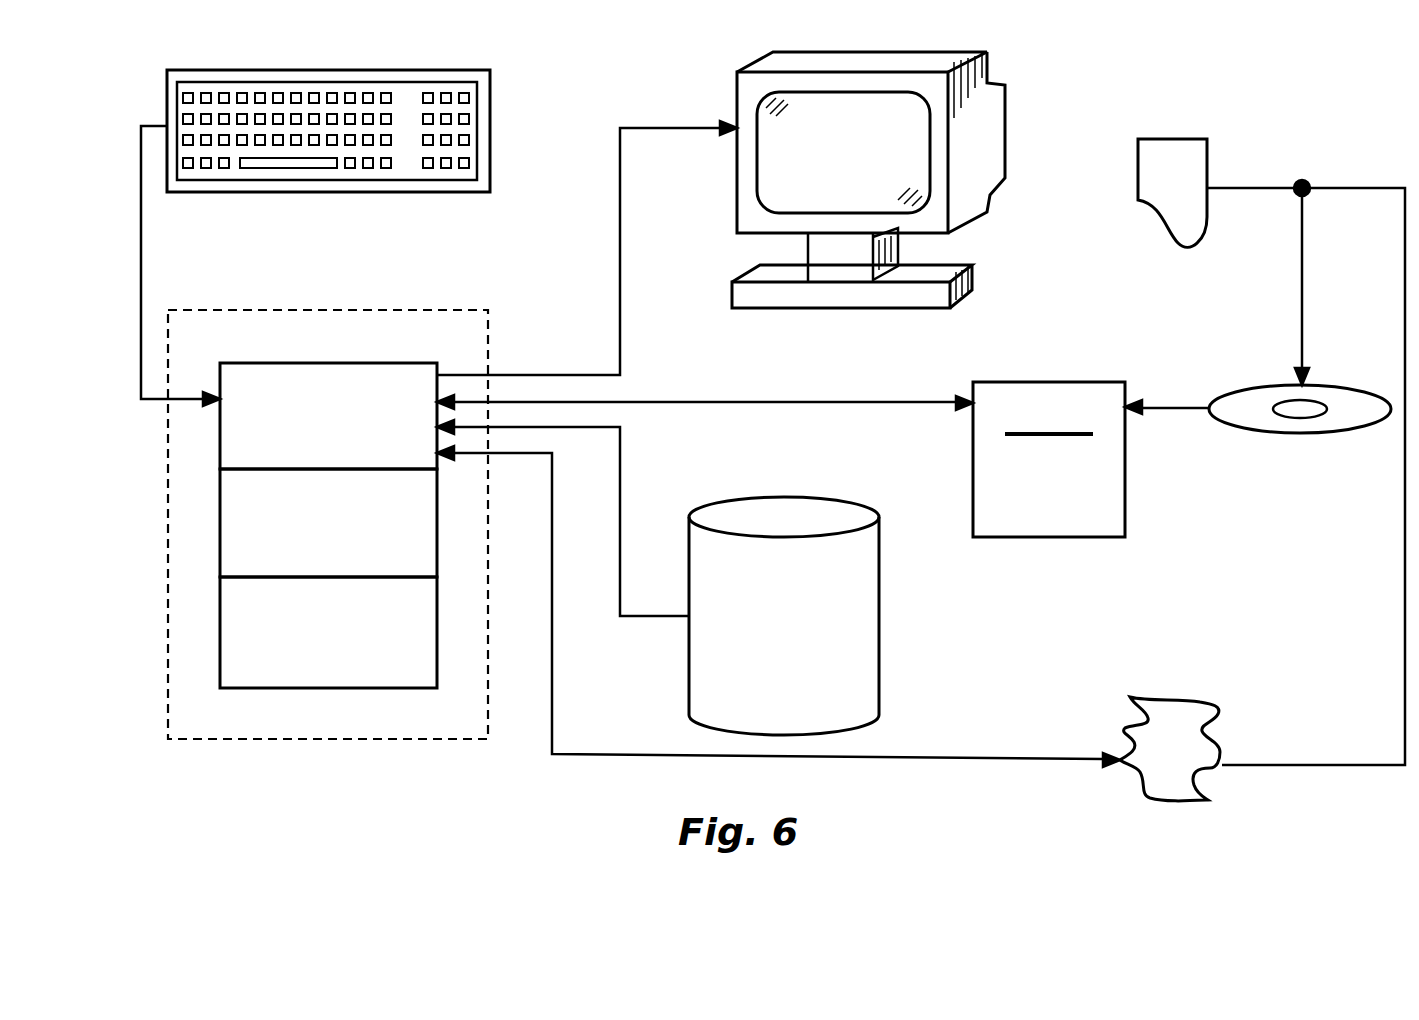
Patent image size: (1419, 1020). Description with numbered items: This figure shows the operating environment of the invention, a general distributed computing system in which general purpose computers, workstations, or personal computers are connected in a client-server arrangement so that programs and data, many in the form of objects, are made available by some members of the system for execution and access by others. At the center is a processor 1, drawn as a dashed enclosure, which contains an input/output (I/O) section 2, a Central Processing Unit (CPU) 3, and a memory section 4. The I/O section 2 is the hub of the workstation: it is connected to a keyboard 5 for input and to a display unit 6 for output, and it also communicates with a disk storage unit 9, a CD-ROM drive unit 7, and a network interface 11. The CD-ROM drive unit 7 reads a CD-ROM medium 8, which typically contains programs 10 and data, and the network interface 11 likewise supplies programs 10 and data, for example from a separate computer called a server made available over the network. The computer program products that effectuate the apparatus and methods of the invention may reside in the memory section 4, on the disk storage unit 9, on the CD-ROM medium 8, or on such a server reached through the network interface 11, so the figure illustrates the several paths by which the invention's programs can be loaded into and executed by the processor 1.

The processor 1 is at (442, 308).
The input/output (I/O) section 2 is at (308, 368).
The Central Processing Unit (CPU) 3 is at (437, 542).
The memory section 4 is at (437, 672).
The keyboard 5 is at (470, 73).
The display unit 6 is at (937, 62).
The CD-ROM drive unit 7 is at (1005, 381).
The CD-ROM medium 8 is at (1275, 390).
The disk storage unit 9 is at (877, 592).
The programs 10 is at (1152, 148).
The network interface 11 is at (1162, 697).